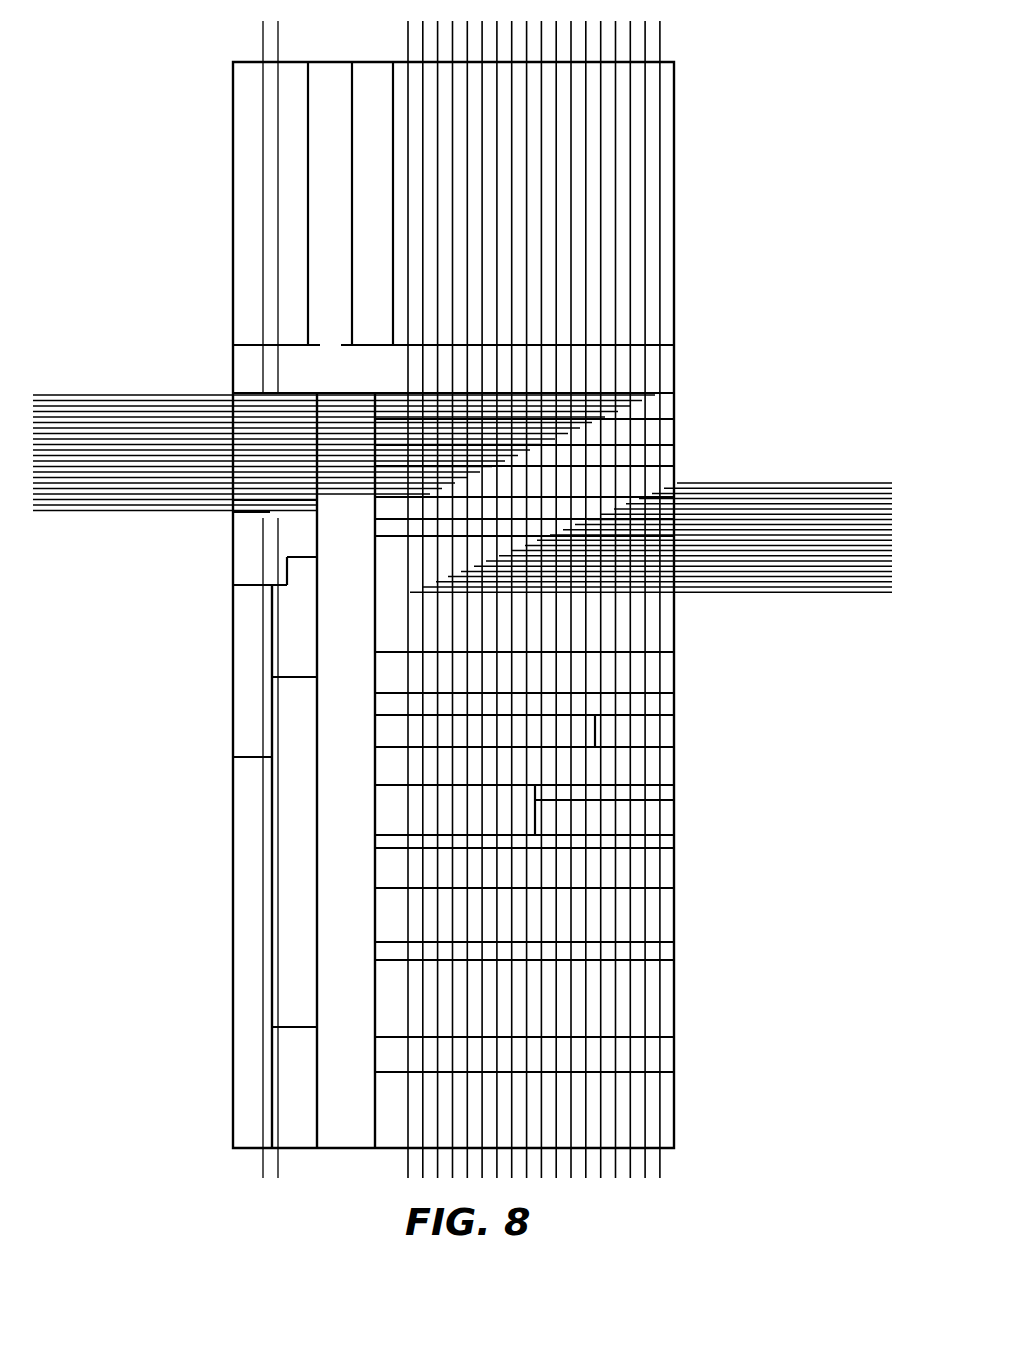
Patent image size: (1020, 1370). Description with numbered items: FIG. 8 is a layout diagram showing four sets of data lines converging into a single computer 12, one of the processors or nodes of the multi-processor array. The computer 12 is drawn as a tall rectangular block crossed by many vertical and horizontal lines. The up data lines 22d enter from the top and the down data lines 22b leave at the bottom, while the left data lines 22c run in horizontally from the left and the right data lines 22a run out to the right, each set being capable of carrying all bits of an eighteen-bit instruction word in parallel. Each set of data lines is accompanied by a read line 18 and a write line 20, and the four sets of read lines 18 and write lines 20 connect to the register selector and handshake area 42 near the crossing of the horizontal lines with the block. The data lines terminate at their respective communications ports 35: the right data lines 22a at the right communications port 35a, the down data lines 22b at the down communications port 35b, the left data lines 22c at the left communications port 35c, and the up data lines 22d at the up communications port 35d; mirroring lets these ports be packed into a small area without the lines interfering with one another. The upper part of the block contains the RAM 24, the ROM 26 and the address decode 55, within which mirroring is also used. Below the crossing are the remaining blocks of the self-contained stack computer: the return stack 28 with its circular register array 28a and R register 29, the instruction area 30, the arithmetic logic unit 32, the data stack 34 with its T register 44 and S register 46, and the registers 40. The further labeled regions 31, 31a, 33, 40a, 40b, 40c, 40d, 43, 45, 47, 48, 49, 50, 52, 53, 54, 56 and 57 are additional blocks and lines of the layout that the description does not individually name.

The computer 12 is at (756, 124).
The read line 18 is at (262, 38).
The write line 20 is at (279, 30).
The right data lines 22a is at (850, 557).
The down data lines 22b is at (633, 1165).
The left data lines 22c is at (83, 432).
The up data lines 22d is at (632, 203).
The RAM 24 is at (550, 206).
The ROM 26 is at (272, 201).
The return stack 28 is at (570, 637).
The circular register array 28a is at (505, 637).
The R register 29 is at (492, 685).
The instruction area 30 is at (545, 1020).
The driver block group 31 is at (560, 931).
The driver sub-block 31a is at (505, 1118).
The arithmetic logic unit 32 is at (492, 931).
The driver sub-block 33 is at (492, 1071).
The data stack 34 is at (640, 843).
The communications ports 35 is at (758, 347).
The right communications port 35a is at (678, 487).
The down communications port 35b is at (678, 503).
The left communications port 35c is at (678, 472).
The up communications port 35d is at (678, 452).
The registers 40 is at (785, 748).
The signal line block 40a is at (558, 779).
The signal line 40b is at (640, 795).
The signal line 40c is at (640, 815).
The signal line 40d is at (655, 537).
The register selector and handshake area 42 is at (282, 462).
The left block 43 is at (315, 637).
The T register 44 is at (315, 1096).
The upper routing region 45 is at (464, 418).
The S register 46 is at (644, 444).
The center column region 47 is at (362, 530).
The control block 48 is at (640, 952).
The upper block 49 is at (390, 195).
The middle block 50 is at (542, 882).
The left column block 52 is at (275, 852).
The block 53 is at (492, 741).
The left block 54 is at (315, 804).
The address decode 55 is at (348, 176).
The line 56 is at (640, 705).
The line 57 is at (640, 730).